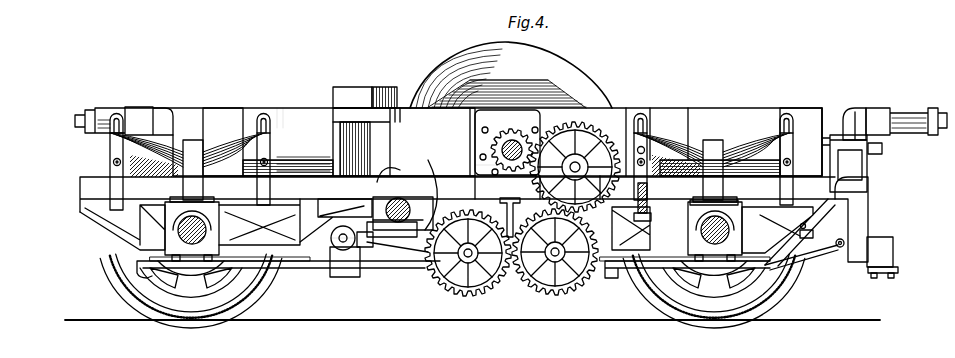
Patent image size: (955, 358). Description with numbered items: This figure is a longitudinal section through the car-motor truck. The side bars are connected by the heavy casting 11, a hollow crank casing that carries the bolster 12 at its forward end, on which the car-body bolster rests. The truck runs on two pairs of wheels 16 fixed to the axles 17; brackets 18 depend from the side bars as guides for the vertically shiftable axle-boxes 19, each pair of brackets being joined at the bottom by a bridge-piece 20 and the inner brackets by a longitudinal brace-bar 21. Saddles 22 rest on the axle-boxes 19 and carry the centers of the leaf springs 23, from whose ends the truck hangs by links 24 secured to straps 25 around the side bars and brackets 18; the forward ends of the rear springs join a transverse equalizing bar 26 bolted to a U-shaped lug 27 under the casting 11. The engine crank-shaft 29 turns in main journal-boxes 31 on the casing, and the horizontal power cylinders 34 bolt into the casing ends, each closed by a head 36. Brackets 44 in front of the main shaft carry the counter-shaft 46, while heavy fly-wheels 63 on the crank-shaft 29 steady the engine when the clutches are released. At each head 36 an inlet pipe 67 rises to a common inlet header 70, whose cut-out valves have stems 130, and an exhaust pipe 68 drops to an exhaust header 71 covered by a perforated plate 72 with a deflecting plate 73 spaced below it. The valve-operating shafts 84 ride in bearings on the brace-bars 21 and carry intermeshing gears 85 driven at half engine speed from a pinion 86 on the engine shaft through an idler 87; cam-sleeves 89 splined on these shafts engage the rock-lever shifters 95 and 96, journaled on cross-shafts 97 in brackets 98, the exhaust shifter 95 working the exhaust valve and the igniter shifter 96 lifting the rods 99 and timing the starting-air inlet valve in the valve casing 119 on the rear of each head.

The casting 11 is at (400, 118).
The bolster 12 is at (350, 97).
The wheels 16 is at (128, 293).
The axles 17 is at (172, 234).
The brackets 18 is at (112, 222).
The axle-boxes 19 is at (168, 218).
The bridge-piece 20 is at (197, 268).
The brace-bar 21 is at (410, 266).
The saddles 22 is at (192, 186).
The leaf springs 23 is at (213, 150).
The links 24 is at (110, 148).
The straps 25 is at (110, 172).
The equalizing bar 26 is at (650, 200).
The U-shaped lug 27 is at (506, 212).
The engine crank-shaft 29 is at (498, 148).
The main journal-boxes 31 is at (575, 167).
The power cylinders 34 is at (280, 125).
The heads 36 is at (228, 108).
The brackets 44 is at (404, 169).
The counter-shaft 46 is at (398, 198).
The fly-wheels 63 is at (568, 74).
The inlet pipe 67 is at (855, 118).
The exhaust pipe 68 is at (862, 215).
The inlet header 70 is at (884, 147).
The exhaust header 71 is at (882, 245).
The perforated plate 72 is at (892, 267).
The deflecting plate 73 is at (880, 278).
The valve-operating shafts 84 is at (468, 253).
The gears 85 is at (499, 283).
The pinion 86 is at (495, 168).
The idler 87 is at (528, 122).
The cam-sleeves 89 is at (588, 145).
The shifter 95 is at (383, 238).
The shifter 96 is at (818, 248).
The cross-shafts 97 is at (336, 246).
The brackets 98 is at (343, 250).
The rods 99 is at (810, 231).
The valve casing 119 is at (868, 165).
The stems 130 is at (905, 120).